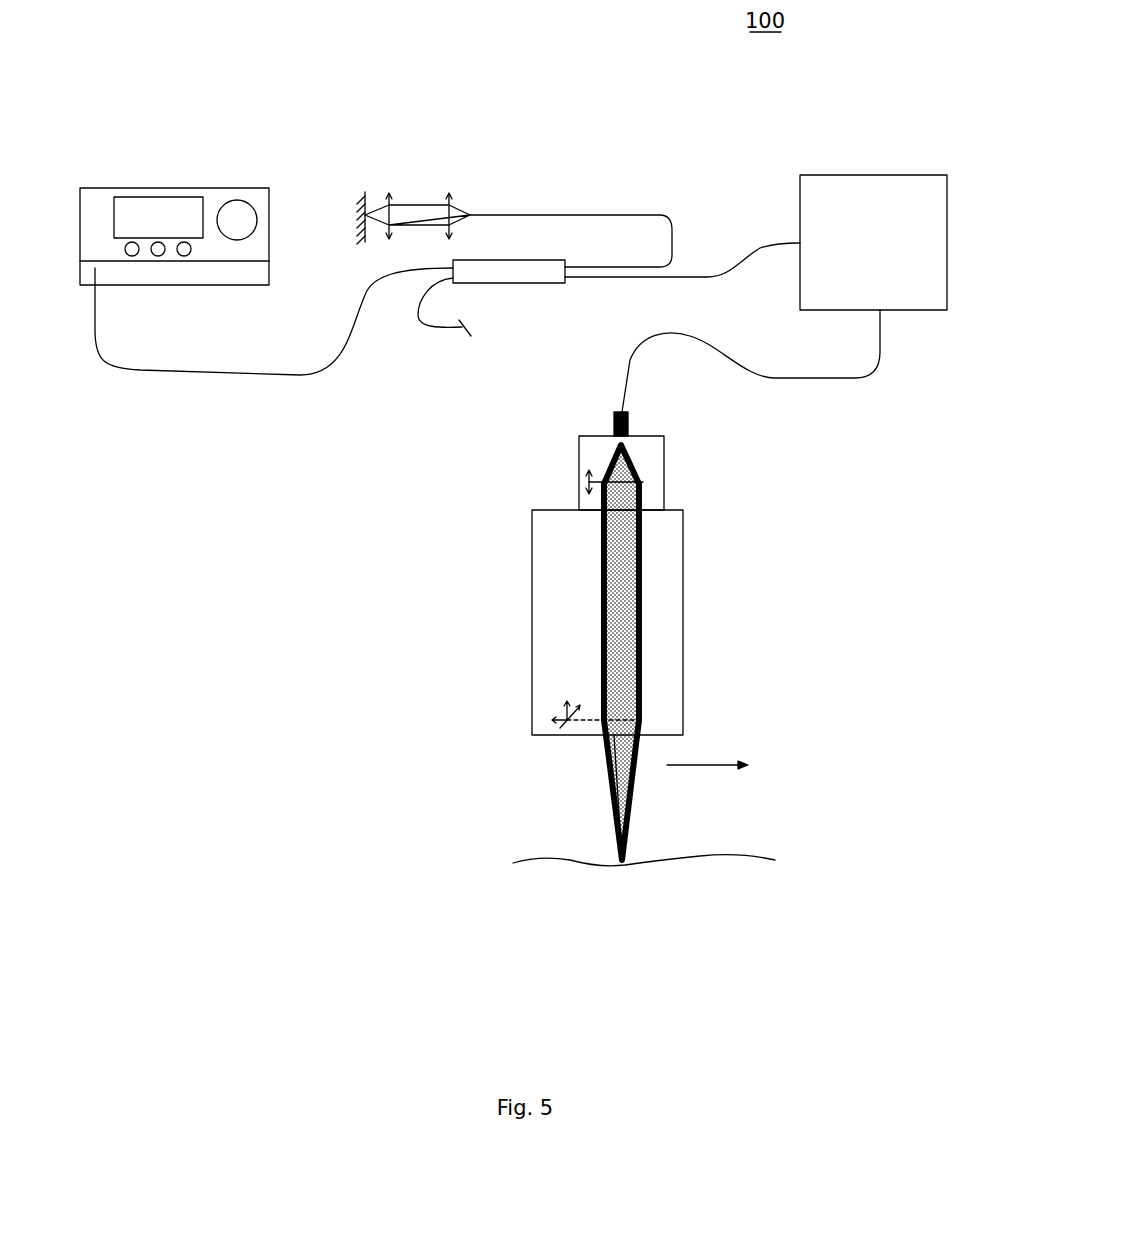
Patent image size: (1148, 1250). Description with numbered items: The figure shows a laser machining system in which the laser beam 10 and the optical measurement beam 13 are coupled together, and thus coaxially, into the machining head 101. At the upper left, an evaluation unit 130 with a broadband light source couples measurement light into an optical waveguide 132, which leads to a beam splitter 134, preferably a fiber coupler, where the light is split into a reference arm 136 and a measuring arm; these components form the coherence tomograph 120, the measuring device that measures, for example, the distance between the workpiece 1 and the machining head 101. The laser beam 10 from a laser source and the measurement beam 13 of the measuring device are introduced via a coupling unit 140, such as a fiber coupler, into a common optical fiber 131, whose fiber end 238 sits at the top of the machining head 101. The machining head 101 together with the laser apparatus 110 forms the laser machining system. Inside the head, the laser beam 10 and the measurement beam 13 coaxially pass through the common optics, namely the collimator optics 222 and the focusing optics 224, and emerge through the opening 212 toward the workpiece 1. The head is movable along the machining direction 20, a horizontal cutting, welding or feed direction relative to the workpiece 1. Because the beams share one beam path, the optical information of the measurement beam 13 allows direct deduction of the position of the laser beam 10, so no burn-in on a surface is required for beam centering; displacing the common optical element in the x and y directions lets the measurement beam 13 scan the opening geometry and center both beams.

The evaluation unit 130 is at (172, 188).
The optical waveguide 132 is at (227, 377).
The reference arm 136 is at (493, 215).
The coherence tomograph 120 is at (605, 165).
The beam splitter 134 is at (537, 283).
The coupling unit 140 is at (868, 192).
The optical fiber 131 is at (802, 380).
The fiber end 238 is at (630, 425).
The laser apparatus 110 is at (462, 515).
The collimator optics 222 is at (643, 482).
The machining head 101 is at (683, 587).
The laser beam 10 is at (600, 572).
The optical measurement beam 13 is at (625, 505).
The focusing optics 224 is at (643, 720).
The opening 212 is at (607, 772).
The machining direction 20 is at (707, 767).
The workpiece 1 is at (773, 858).